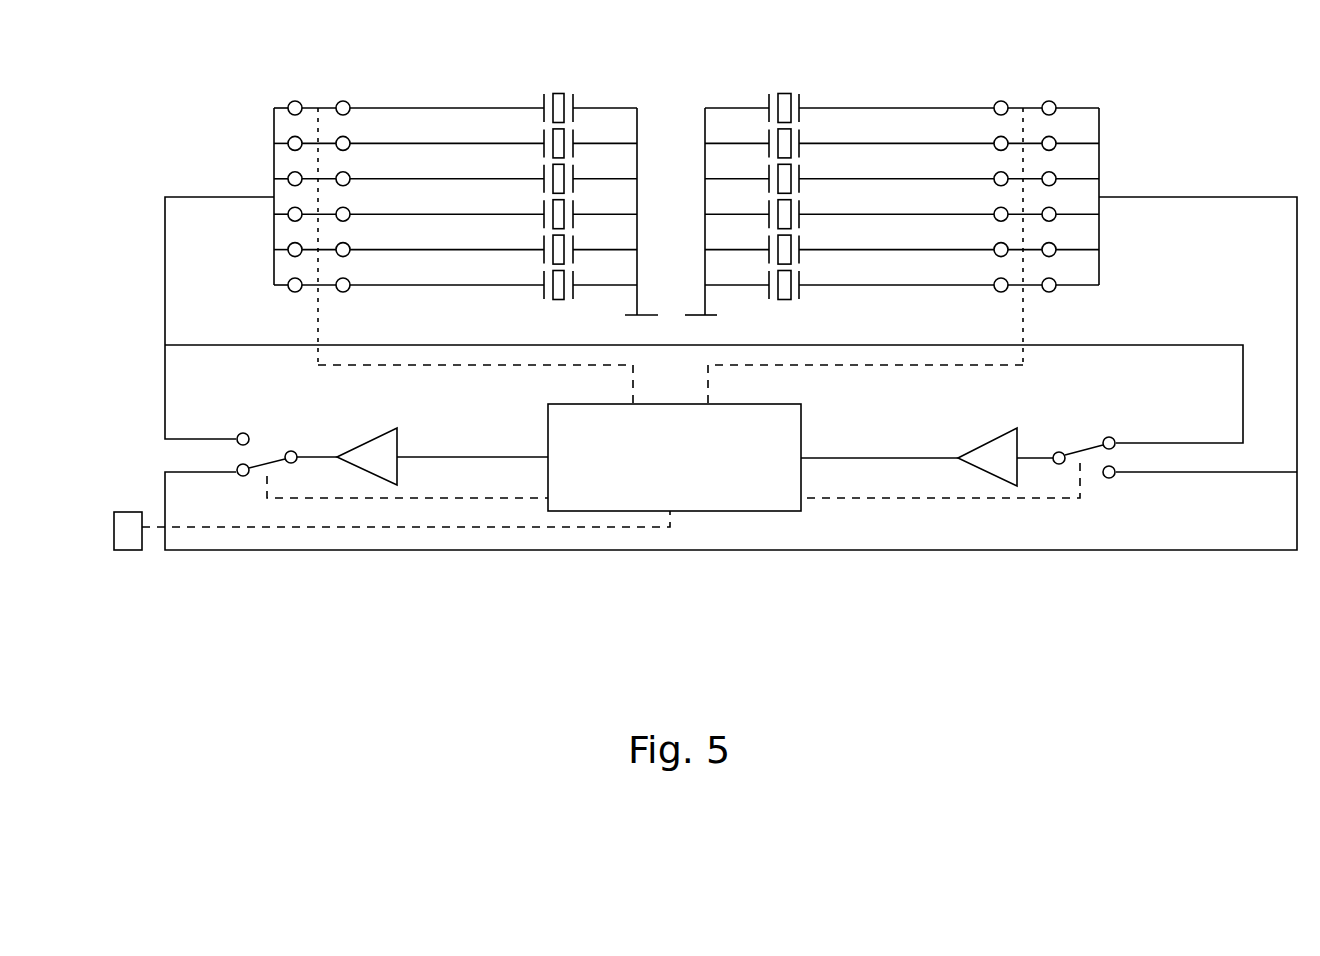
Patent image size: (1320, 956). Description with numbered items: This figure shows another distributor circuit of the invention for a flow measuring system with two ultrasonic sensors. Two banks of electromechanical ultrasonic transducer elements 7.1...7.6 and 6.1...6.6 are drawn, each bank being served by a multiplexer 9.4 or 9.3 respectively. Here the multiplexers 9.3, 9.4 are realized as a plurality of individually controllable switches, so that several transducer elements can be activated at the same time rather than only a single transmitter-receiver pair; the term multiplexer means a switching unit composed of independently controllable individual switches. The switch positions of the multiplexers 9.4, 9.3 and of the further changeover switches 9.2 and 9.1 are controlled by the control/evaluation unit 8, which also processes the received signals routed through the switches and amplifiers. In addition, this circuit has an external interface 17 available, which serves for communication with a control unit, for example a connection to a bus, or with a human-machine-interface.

The multiplexer 9.4 is at (254, 155).
The multiplexer 9.3 is at (1126, 167).
The ultrasonic transducer elements 7.1...7.6 is at (559, 72).
The ultrasonic transducer elements 6.1...6.6 is at (788, 72).
The control/evaluation unit 8 is at (652, 467).
The multiplexer 9.1 is at (1089, 494).
The multiplexer 9.2 is at (277, 500).
The external interface 17 is at (132, 538).